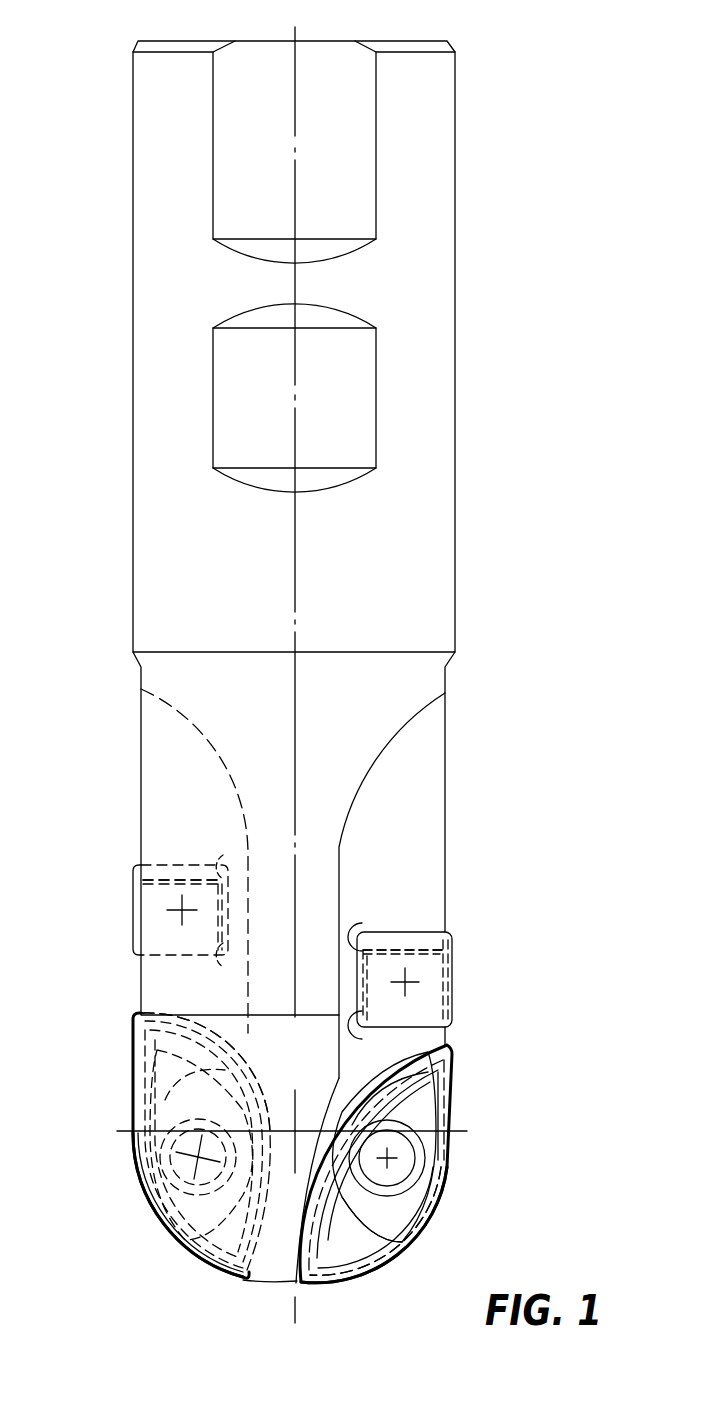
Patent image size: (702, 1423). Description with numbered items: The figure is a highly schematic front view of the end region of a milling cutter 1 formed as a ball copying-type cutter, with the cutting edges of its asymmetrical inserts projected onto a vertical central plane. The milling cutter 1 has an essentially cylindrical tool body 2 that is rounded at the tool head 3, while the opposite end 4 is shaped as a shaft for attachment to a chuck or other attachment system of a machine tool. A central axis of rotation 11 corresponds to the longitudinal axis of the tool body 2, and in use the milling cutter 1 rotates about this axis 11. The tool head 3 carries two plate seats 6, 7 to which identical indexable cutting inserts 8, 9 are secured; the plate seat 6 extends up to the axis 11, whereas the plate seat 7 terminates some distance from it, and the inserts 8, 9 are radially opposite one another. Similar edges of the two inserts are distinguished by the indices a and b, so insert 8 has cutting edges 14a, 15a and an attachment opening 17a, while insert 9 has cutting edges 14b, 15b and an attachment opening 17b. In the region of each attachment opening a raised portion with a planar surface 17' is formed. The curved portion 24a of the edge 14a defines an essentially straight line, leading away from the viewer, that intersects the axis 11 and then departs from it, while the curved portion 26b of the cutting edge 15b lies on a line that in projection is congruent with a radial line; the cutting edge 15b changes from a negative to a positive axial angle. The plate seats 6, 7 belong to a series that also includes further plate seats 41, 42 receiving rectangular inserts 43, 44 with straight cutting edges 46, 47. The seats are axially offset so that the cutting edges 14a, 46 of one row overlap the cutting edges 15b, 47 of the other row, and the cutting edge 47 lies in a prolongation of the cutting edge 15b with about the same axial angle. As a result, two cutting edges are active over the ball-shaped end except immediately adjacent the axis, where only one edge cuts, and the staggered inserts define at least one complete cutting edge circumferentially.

The milling cutter 1 is at (120, 276).
The tool body 2 is at (477, 633).
The tool head 3 is at (122, 1265).
The opposite end 4 is at (467, 204).
The plate seat 6 is at (462, 1196).
The plate seat 7 is at (119, 1169).
The indexable cutting insert 8 is at (407, 1108).
The indexable cutting insert 9 is at (173, 1095).
The central axis of rotation 11 is at (297, 32).
The cutting edge 14a is at (405, 1264).
The cutting edge 14b is at (240, 1068).
The cutting edge 15a is at (343, 1108).
The cutting edge 15b is at (208, 1282).
The attachment opening 17a is at (402, 1148).
The attachment opening 17b is at (170, 1198).
The planar surface 17' is at (426, 1220).
The curved portion 24a is at (362, 1273).
The curved portion 26b is at (183, 1245).
The further plate seat 41 is at (462, 917).
The further plate seat 42 is at (121, 853).
The insert 43 is at (418, 975).
The insert 44 is at (153, 905).
The straight cutting edge 46 is at (453, 1007).
The straight cutting edge 47 is at (133, 947).